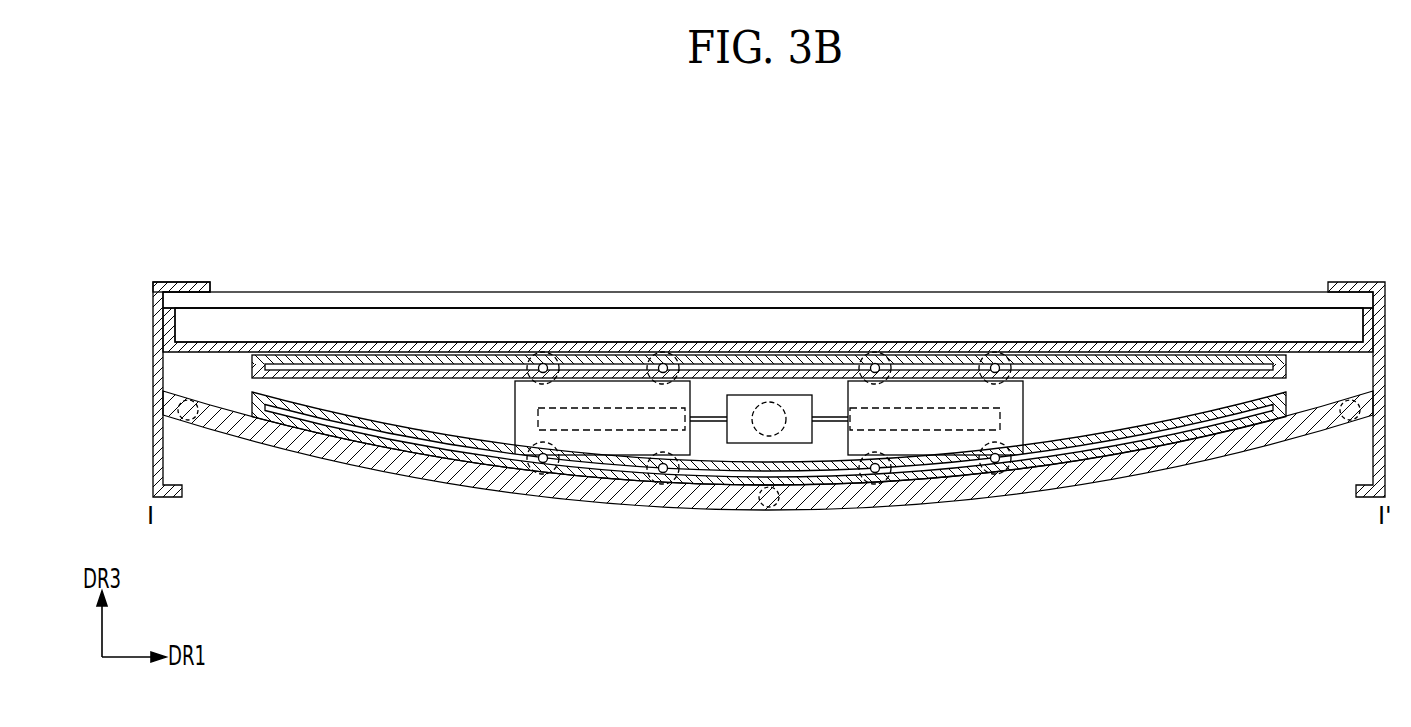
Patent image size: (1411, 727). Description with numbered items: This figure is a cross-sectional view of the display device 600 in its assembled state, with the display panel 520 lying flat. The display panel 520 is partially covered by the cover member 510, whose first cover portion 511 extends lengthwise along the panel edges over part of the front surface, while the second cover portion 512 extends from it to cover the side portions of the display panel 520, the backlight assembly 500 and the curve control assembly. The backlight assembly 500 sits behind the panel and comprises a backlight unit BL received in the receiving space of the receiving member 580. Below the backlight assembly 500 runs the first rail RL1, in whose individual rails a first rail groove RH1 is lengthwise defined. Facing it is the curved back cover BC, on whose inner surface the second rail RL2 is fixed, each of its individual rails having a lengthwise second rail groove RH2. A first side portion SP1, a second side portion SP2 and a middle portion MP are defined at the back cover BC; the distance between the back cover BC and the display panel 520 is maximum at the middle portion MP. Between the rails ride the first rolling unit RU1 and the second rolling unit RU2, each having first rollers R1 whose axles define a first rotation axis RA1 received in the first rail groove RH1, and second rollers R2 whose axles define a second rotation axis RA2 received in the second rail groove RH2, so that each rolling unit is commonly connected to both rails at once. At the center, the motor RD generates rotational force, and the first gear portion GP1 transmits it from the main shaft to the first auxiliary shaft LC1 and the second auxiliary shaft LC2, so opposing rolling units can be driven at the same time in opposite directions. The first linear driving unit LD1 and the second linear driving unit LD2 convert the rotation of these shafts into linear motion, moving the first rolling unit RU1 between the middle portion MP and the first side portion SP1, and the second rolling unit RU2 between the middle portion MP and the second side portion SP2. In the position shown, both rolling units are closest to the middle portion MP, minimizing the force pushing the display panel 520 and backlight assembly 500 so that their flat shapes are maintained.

The display device 600 is at (1267, 182).
The cover member 510 is at (210, 210).
The first cover portion 511 is at (182, 289).
The second cover portion 512 is at (160, 370).
The display panel 520 is at (385, 300).
The backlight assembly 500 is at (1180, 210).
The backlight unit BL is at (1092, 330).
The receiving member 580 is at (1143, 345).
The first rail RL1 is at (270, 364).
The first rail groove RH1 is at (322, 372).
The first rolling unit RU1 is at (578, 210).
The second rolling unit RU2 is at (910, 210).
The first roller R1 is at (512, 353).
The first rotation axis RA1 is at (543, 366).
The first linear driving unit LD1 is at (603, 408).
The second linear driving unit LD2 is at (935, 408).
The motor RD is at (763, 403).
The first gear portion GP1 is at (797, 434).
The first auxiliary shaft LC1 is at (705, 422).
The second auxiliary shaft LC2 is at (830, 422).
The back cover BC is at (905, 495).
The first side portion SP1 is at (202, 417).
The second side portion SP2 is at (1340, 418).
The middle portion MP is at (766, 505).
The second rail RL2 is at (268, 410).
The second rail groove RH2 is at (325, 422).
The second roller R2 is at (530, 470).
The second rotation axis RA2 is at (543, 461).